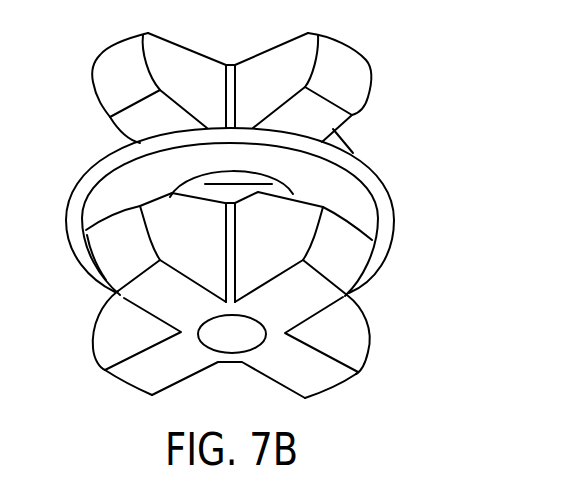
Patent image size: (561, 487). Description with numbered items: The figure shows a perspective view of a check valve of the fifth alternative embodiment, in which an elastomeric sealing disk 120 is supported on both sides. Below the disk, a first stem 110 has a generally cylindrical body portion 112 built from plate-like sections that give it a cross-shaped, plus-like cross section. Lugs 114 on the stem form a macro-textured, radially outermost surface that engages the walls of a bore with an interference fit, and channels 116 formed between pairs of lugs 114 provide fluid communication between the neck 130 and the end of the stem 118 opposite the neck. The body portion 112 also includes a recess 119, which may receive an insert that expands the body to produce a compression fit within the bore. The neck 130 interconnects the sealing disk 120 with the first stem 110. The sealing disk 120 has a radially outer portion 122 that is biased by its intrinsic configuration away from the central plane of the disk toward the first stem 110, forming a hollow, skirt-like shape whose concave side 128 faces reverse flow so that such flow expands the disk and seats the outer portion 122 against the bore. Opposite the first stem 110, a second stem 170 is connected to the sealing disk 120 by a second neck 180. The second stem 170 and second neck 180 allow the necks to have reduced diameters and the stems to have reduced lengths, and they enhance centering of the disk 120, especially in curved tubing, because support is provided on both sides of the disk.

The stem 110 is at (246, 303).
The body portion 112 is at (216, 360).
The lugs 114 is at (372, 360).
The channel 116 is at (298, 338).
The end of the stem 118 is at (137, 284).
The recess 119 is at (245, 353).
The elastomeric sealing disk 120 is at (218, 211).
The radially outer portion 122 is at (356, 152).
The concave side 128 is at (70, 195).
The neck 130 is at (213, 181).
The second stem 170 is at (227, 64).
The second neck 180 is at (134, 144).